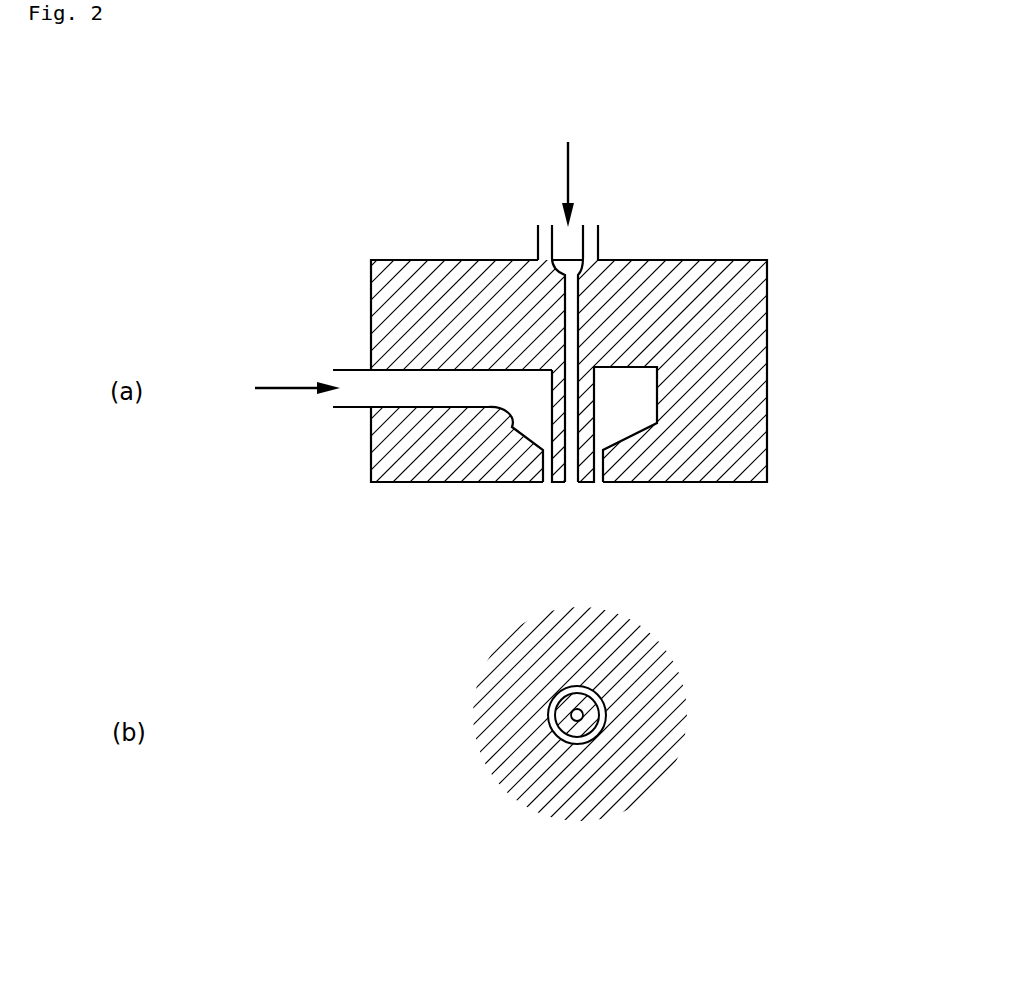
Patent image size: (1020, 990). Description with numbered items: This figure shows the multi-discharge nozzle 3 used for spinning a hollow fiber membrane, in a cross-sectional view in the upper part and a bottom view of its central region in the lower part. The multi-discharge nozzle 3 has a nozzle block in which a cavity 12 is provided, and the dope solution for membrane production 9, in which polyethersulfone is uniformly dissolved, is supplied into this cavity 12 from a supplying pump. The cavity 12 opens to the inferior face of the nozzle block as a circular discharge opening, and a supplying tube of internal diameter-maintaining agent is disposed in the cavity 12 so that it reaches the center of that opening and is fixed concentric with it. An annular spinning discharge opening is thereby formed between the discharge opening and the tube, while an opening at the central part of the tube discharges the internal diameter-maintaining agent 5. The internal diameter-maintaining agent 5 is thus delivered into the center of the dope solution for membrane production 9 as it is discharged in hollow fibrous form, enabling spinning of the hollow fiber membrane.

The multi-discharge nozzle 3 is at (749, 228).
The internal diameter-maintaining agent 5 is at (536, 165).
The dope solution for membrane production 9 is at (266, 388).
The cavity 12 is at (498, 432).